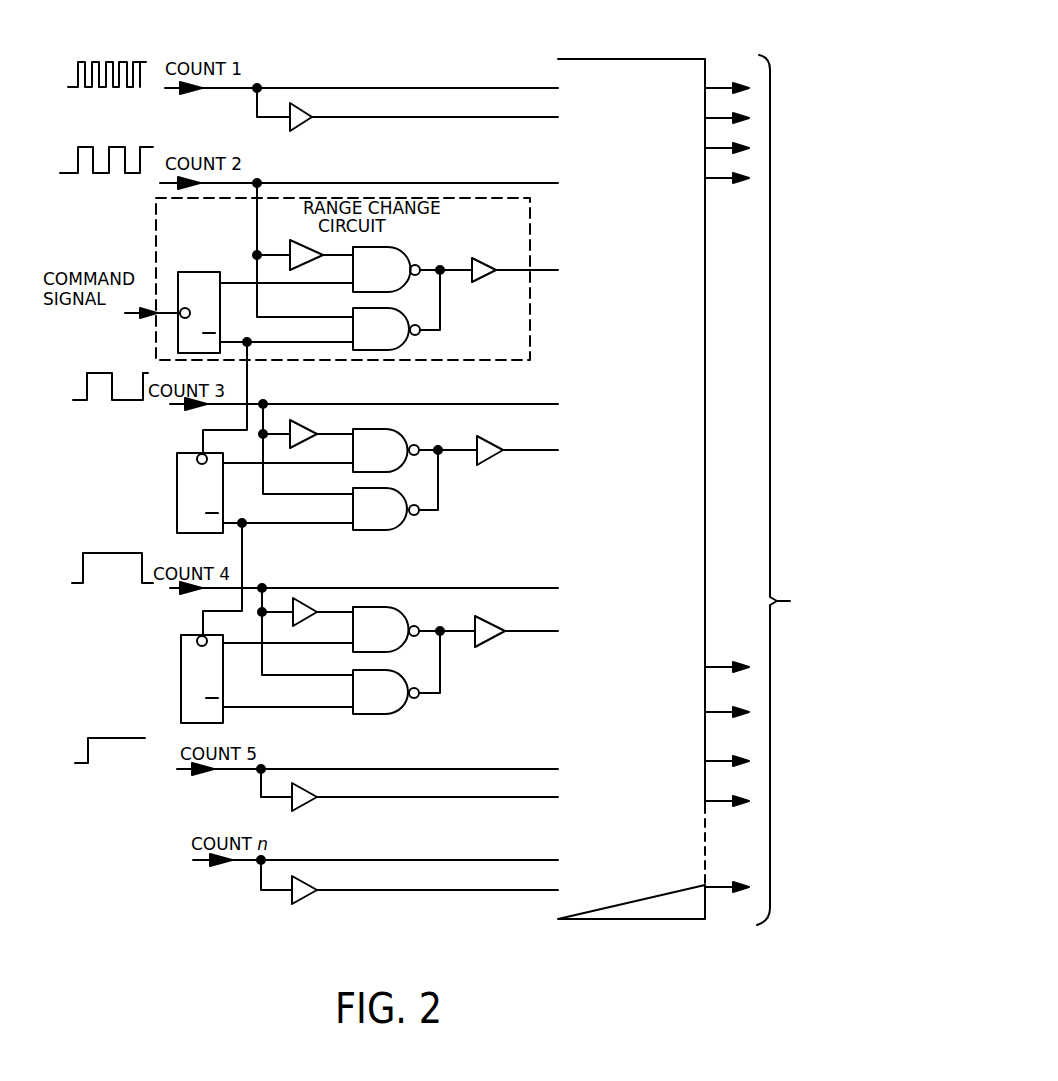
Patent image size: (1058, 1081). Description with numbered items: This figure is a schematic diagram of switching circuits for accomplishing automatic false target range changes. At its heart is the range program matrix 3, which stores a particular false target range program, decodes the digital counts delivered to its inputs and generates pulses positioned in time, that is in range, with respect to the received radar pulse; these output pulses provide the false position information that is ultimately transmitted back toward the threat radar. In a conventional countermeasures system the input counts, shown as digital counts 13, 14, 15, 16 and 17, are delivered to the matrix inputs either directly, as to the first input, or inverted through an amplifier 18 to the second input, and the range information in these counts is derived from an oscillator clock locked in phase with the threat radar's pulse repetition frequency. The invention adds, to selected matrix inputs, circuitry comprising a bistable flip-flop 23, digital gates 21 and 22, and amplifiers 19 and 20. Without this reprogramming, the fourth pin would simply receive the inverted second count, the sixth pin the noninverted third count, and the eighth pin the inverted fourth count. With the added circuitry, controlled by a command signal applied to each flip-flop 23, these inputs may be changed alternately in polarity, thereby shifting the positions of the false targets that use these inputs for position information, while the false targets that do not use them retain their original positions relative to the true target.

The range program matrix 3 is at (668, 58).
The digital count 13 is at (115, 60).
The digital count 14 is at (117, 147).
The digital count 15 is at (85, 378).
The digital count 16 is at (117, 553).
The digital count 17 is at (135, 738).
The amplifier 18 is at (307, 110).
The amplifier 19 is at (290, 243).
The amplifier 20 is at (490, 277).
The digital gate 21 is at (410, 255).
The digital gate 22 is at (413, 523).
The bistable flip-flop 23 is at (178, 283).